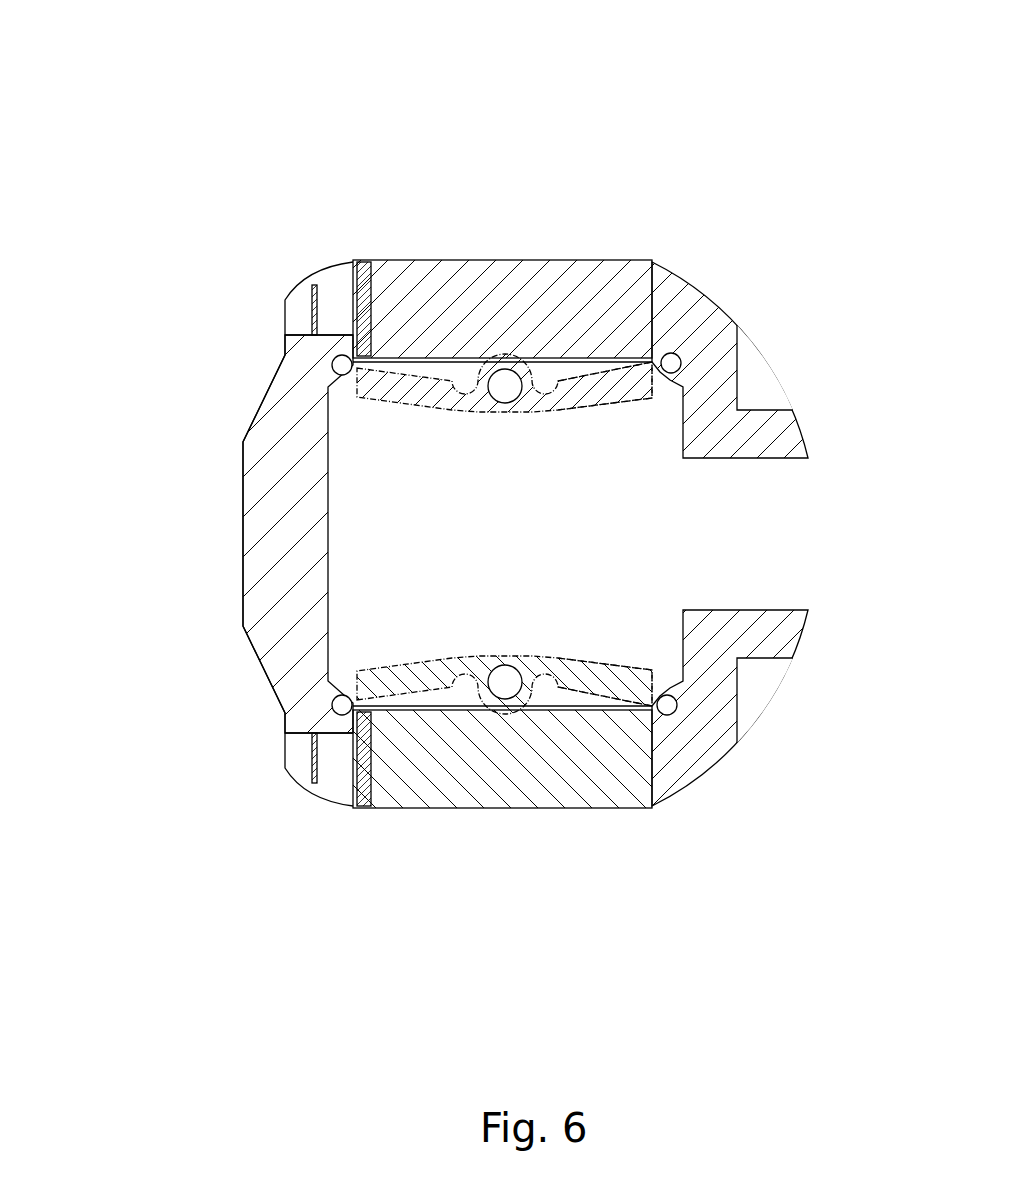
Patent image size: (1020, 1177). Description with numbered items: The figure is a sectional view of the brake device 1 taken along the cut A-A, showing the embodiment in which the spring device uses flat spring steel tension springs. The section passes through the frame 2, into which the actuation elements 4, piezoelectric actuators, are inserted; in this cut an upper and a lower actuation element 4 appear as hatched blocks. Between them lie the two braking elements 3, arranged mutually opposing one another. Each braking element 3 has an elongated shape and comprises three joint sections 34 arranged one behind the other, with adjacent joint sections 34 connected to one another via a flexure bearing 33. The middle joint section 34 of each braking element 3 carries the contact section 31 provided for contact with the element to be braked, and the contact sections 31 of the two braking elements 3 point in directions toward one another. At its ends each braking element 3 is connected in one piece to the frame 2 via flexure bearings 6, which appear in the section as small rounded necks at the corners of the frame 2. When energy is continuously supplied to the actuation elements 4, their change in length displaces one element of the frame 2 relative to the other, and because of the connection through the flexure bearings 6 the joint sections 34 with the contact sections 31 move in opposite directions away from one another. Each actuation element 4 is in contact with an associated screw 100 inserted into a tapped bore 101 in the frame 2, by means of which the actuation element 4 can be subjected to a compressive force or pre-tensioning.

The brake device 1 is at (390, 203).
The frame 2 is at (712, 343).
The braking element 3 is at (597, 392).
The actuation element 4 is at (572, 300).
The flexure bearing 6 is at (337, 378).
The contact section 31 is at (510, 639).
The flexure bearing 33 is at (465, 672).
The joint sections 34 is at (390, 387).
The screw 100 is at (327, 303).
The tapped bore 101 is at (308, 319).